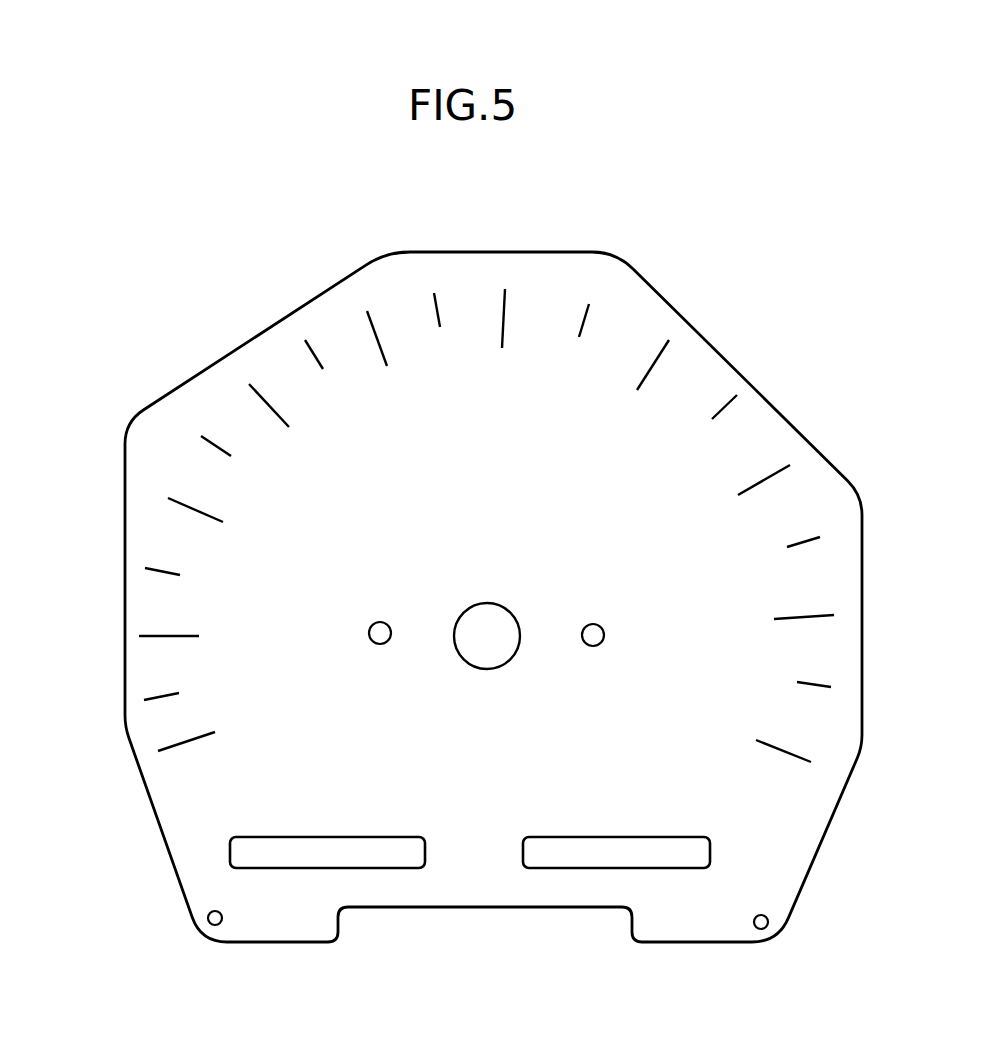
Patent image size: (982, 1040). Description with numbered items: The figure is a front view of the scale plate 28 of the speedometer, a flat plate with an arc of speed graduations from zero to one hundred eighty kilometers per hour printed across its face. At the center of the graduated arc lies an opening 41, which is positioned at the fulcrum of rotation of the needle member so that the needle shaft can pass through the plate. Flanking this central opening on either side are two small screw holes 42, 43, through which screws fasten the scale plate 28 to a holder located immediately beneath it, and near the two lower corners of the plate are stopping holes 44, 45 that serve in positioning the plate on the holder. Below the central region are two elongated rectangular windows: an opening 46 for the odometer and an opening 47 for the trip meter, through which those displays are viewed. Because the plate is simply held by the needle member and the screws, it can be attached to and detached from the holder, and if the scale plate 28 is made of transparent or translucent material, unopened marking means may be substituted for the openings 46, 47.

The scale plate 28 is at (122, 535).
The opening 41 is at (479, 669).
The screw hole 42 is at (372, 644).
The screw hole 43 is at (591, 646).
The stopping hole 44 is at (207, 918).
The stopping hole 45 is at (768, 921).
The opening for odometer 46 is at (324, 845).
The opening for trip meter 47 is at (618, 842).